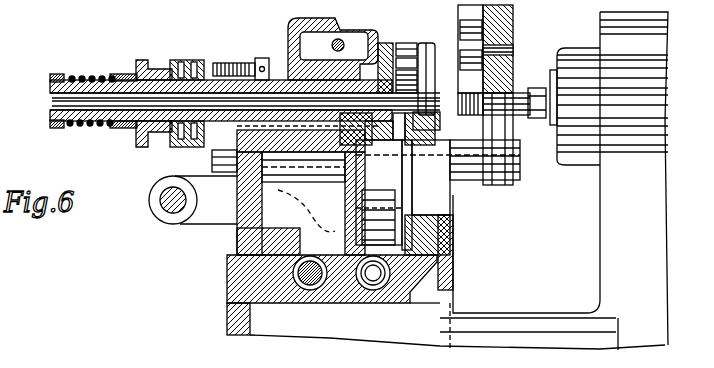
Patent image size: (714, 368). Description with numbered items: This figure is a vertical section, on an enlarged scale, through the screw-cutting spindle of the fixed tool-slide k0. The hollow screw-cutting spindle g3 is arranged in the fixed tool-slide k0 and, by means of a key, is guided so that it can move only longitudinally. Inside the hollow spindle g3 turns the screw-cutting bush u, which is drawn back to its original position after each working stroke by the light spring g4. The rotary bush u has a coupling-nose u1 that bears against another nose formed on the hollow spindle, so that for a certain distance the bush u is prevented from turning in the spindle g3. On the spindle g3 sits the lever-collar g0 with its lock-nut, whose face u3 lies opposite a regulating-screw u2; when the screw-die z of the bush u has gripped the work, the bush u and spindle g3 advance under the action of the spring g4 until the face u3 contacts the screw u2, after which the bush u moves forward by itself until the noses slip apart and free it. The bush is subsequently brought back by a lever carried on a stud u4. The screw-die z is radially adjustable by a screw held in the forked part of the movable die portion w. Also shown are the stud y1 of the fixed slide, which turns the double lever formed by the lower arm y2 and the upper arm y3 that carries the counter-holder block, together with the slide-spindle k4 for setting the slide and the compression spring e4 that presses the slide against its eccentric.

The screw-cutting bush u is at (50, 100).
The coupling-nose u1 is at (368, 99).
The regulating-screw u2 is at (227, 62).
The face of lever-collar u3 is at (193, 60).
The stud u4 is at (341, 40).
The lever-collar g0 is at (152, 60).
The screw-cutting spindle g3 is at (126, 128).
The light spring g4 is at (76, 124).
The movable die portion w is at (425, 45).
The screw-die z is at (434, 118).
The stud y1 is at (449, 166).
The lower arm of double lever y2 is at (379, 192).
The upper arm of double lever y3 is at (508, 151).
The fixed tool-slide k0 is at (457, 252).
The slide-spindle k4 is at (310, 294).
The spring e4 is at (373, 294).